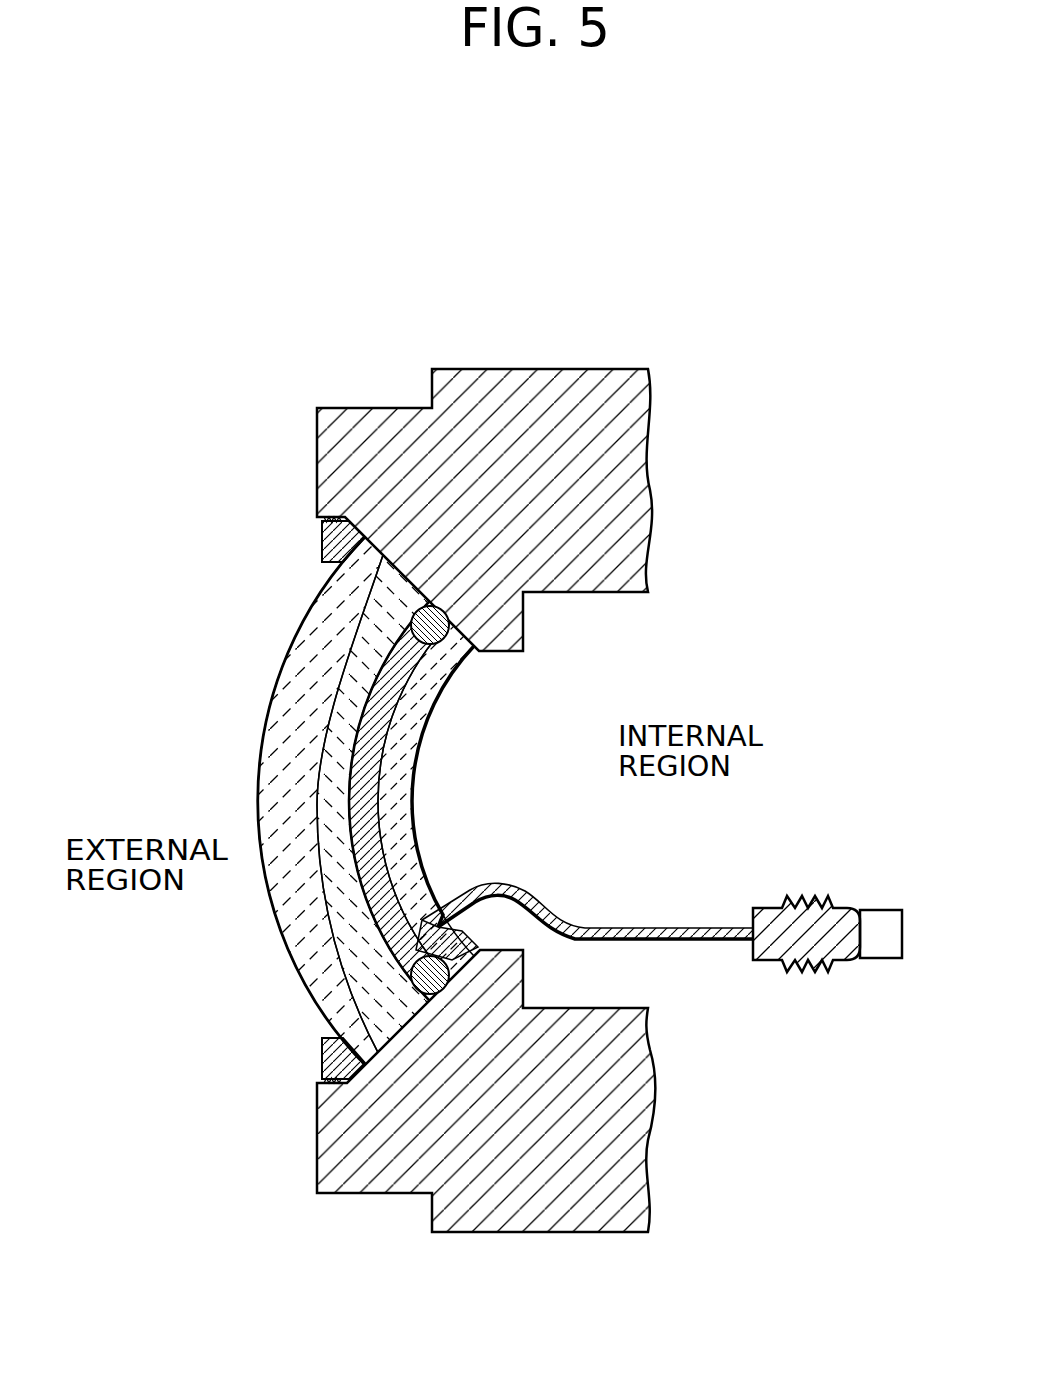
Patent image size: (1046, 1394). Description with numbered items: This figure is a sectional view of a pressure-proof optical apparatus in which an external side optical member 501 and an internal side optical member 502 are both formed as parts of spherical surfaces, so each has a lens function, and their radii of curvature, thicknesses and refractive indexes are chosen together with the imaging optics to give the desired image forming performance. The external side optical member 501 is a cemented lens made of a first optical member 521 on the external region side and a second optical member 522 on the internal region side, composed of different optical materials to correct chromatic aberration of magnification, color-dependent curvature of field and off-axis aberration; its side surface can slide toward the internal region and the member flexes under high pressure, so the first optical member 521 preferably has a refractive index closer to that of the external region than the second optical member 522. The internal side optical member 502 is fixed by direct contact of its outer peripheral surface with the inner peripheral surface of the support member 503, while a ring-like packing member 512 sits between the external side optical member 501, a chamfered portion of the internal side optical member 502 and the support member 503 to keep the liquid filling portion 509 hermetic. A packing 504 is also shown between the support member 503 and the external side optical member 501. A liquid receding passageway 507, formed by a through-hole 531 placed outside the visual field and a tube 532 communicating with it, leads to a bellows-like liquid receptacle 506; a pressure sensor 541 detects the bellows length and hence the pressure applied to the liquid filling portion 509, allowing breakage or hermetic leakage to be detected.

The external side optical member 501 is at (260, 801).
The first optical member 521 is at (300, 712).
The second optical member 522 is at (325, 775).
The internal side optical member 502 is at (415, 712).
The liquid filling portion 509 is at (362, 786).
The support member 503 is at (627, 424).
The packing 504 is at (320, 545).
The ring-like packing member 512 is at (452, 616).
The liquid receding passageway 507 is at (609, 992).
The through-hole 531 is at (595, 968).
The tube 532 is at (453, 927).
The liquid receptacle 506 is at (810, 956).
The pressure sensor 541 is at (882, 918).